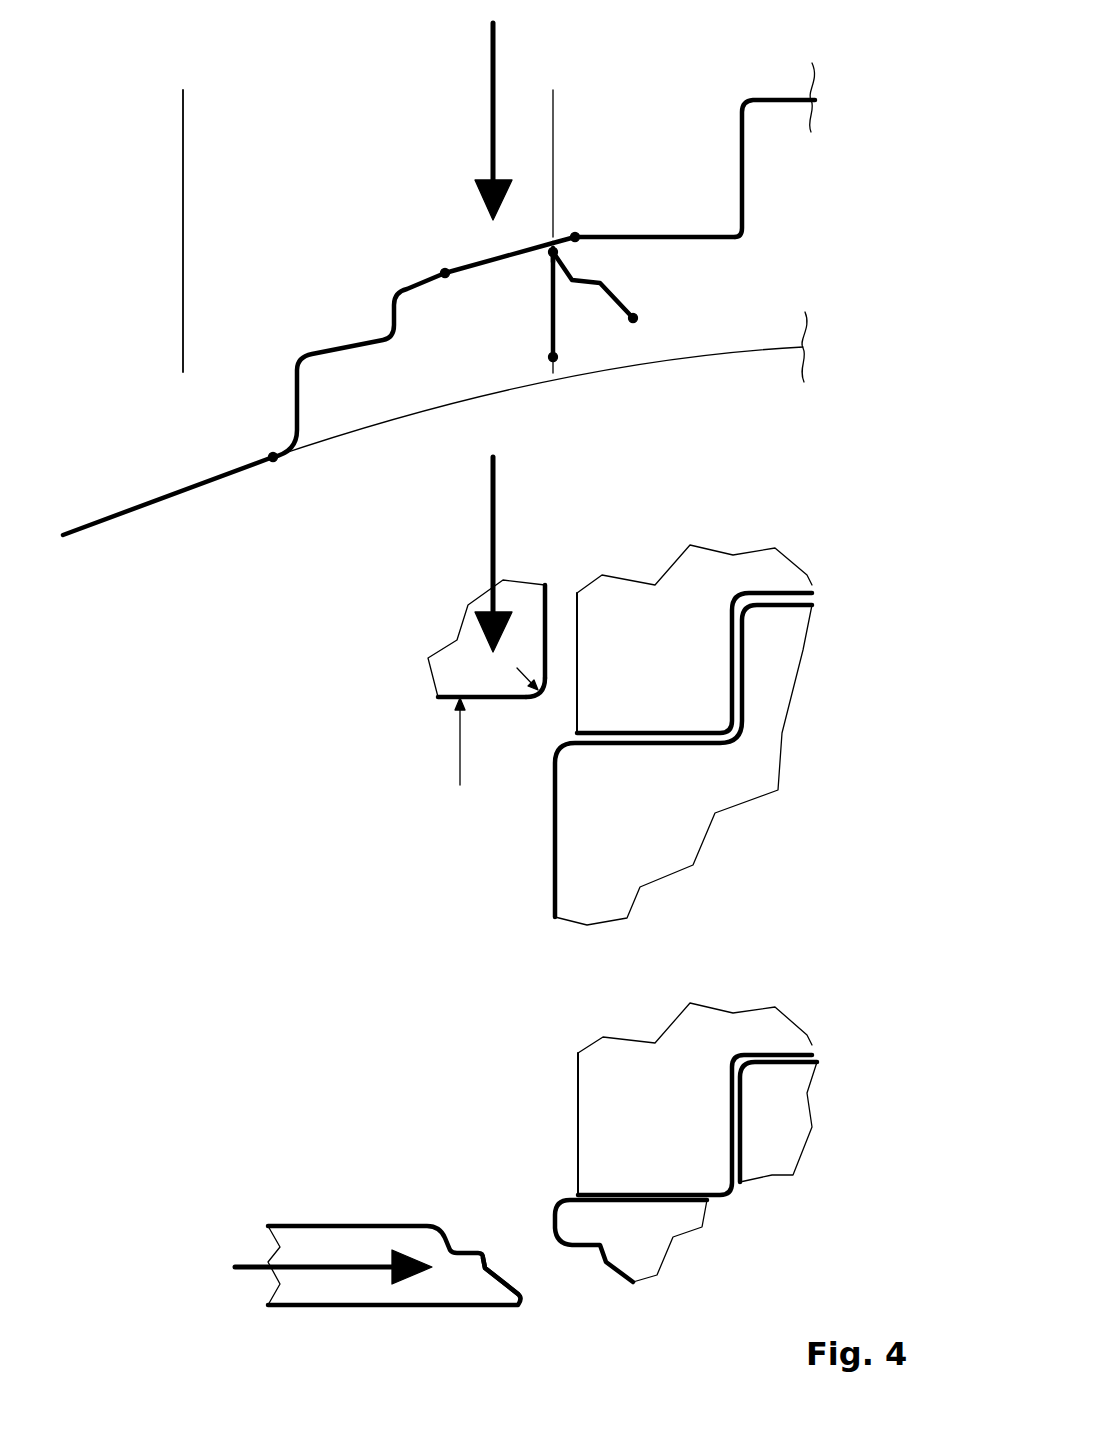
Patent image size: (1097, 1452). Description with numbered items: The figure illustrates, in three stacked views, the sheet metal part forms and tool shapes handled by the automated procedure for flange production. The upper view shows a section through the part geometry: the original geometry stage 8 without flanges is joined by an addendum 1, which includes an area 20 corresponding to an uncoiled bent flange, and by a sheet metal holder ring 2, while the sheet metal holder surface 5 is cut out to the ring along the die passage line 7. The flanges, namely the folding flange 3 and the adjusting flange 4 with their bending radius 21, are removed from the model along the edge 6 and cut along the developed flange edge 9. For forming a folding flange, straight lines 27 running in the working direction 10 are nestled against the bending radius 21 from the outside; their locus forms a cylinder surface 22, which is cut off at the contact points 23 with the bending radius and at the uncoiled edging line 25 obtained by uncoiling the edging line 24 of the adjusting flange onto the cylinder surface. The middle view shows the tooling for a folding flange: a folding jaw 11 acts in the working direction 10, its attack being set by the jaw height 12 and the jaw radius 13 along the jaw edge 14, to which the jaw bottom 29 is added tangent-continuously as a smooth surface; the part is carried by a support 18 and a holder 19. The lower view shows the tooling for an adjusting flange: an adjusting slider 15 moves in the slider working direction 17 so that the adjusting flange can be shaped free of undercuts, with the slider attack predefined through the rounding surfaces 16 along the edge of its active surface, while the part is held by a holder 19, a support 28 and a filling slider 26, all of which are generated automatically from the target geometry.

The addendum 1 is at (353, 338).
The sheet metal holder ring 2 is at (157, 498).
The folding flange 3 is at (553, 302).
The adjusting flange 4 is at (603, 297).
The sheet metal holder surface 5 is at (595, 378).
The edge 6 is at (575, 237).
The die passage line 7 is at (275, 460).
The original geometry stage 8 is at (740, 107).
The developed flange edge 9 is at (445, 273).
The working direction 10 is at (490, 98).
The folding jaw 11 is at (450, 643).
The jaw height 12 is at (458, 753).
The jaw radius 13 is at (518, 677).
The jaw edge 14 is at (542, 692).
The adjusting slider 15 is at (405, 1223).
The rounding surface 16 is at (522, 1292).
The slider working direction 17 is at (243, 1260).
The support 18 is at (718, 812).
The holder 19 is at (668, 568).
The uncoiled flange 20 is at (507, 250).
The bending radius 21 is at (560, 243).
The cylinder surface 22 is at (553, 118).
The contact points 23 is at (552, 262).
The edging line 24 is at (633, 320).
The uncoiled edging line 25 is at (552, 358).
The filling slider 26 is at (672, 1238).
The straight line 27 is at (183, 213).
The support 28 is at (772, 1175).
The jaw bottom 29 is at (493, 700).